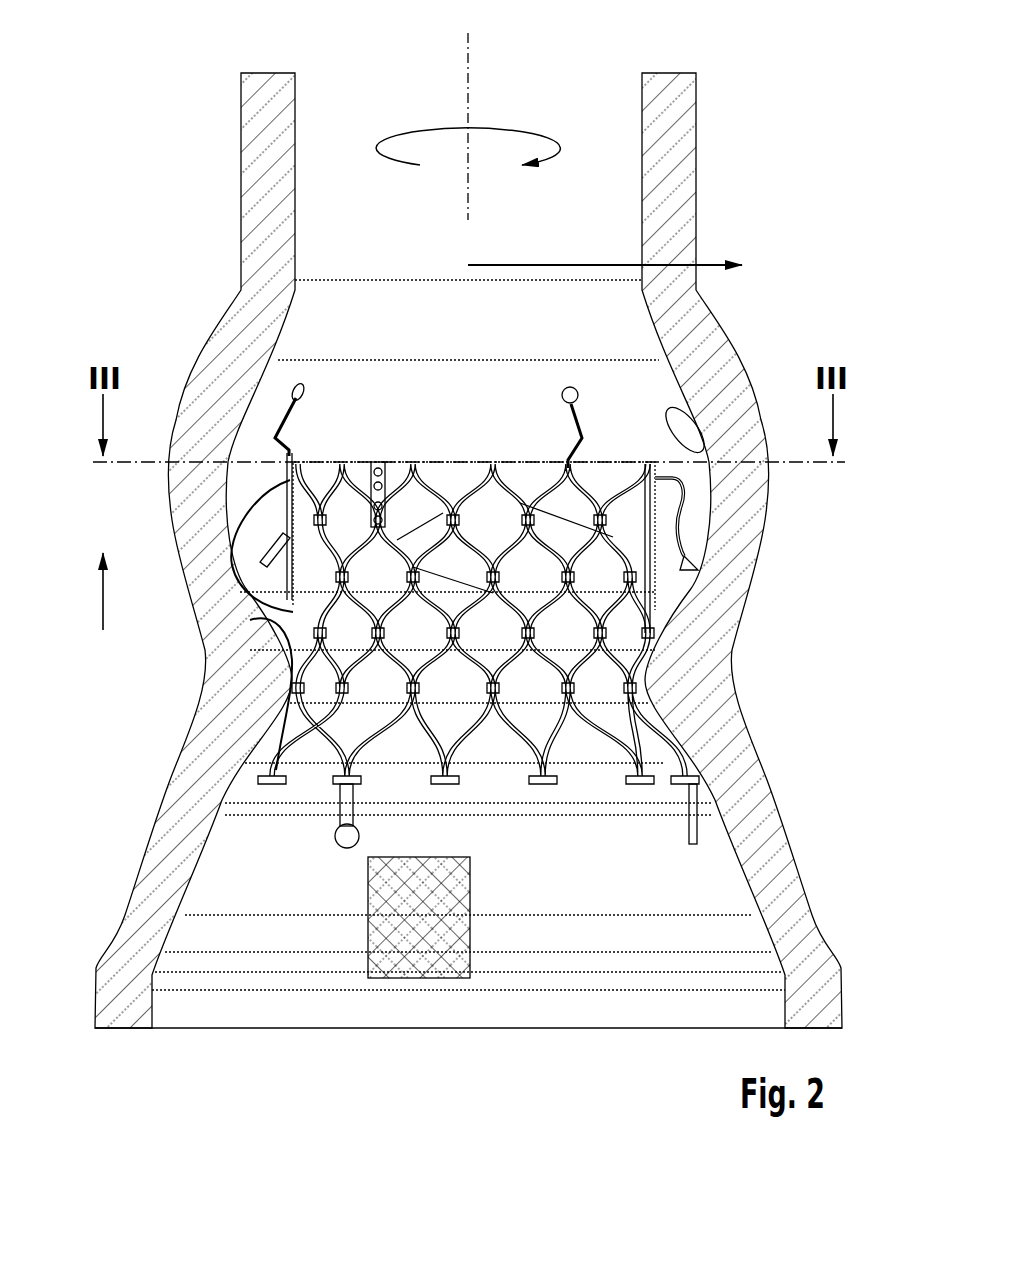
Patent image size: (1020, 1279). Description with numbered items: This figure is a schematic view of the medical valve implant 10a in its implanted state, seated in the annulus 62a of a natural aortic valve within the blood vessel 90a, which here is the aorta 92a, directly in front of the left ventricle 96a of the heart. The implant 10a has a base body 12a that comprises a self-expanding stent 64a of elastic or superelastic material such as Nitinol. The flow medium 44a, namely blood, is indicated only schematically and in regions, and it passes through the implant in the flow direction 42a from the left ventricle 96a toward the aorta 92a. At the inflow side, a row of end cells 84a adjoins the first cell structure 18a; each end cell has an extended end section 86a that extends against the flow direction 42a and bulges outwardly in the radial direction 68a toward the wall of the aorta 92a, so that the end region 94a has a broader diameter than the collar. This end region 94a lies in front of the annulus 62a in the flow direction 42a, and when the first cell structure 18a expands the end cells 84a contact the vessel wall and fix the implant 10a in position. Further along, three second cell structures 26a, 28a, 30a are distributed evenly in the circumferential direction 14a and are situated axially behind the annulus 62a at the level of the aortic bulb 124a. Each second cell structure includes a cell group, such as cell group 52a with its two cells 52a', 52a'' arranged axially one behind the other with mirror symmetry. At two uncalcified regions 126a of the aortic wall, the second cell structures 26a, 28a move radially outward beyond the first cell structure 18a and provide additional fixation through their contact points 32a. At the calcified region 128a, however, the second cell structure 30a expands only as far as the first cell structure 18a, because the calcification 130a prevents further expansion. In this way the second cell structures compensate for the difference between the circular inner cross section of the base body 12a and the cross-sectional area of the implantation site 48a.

The medical valve implant 10a is at (655, 448).
The base body 12a is at (240, 726).
The circumferential direction 14a is at (402, 126).
The first cell structure 18a is at (530, 720).
The second cell structure 26a is at (595, 576).
The second cell structure 28a is at (222, 573).
The second cell structure 30a is at (665, 462).
The contact point 32a is at (293, 592).
The flow direction 42a is at (103, 630).
The flow medium 44a is at (413, 967).
The implantation site 48a is at (690, 690).
The cell group 52a is at (373, 564).
The cell 52a' is at (204, 540).
The cell 52a'' is at (218, 694).
The annulus 62a is at (236, 684).
The stent 64a is at (697, 728).
The radial direction 68a is at (598, 263).
The end cells 84a is at (628, 730).
The end section 86a is at (695, 812).
The blood vessel 90a is at (295, 242).
The aorta 92a is at (318, 245).
The end region 94a is at (700, 755).
The left ventricle 96a is at (197, 980).
The aortic bulb 124a is at (235, 405).
The uncalcified regions 126a is at (262, 553).
The calcified region 128a is at (658, 532).
The calcification 130a is at (667, 583).